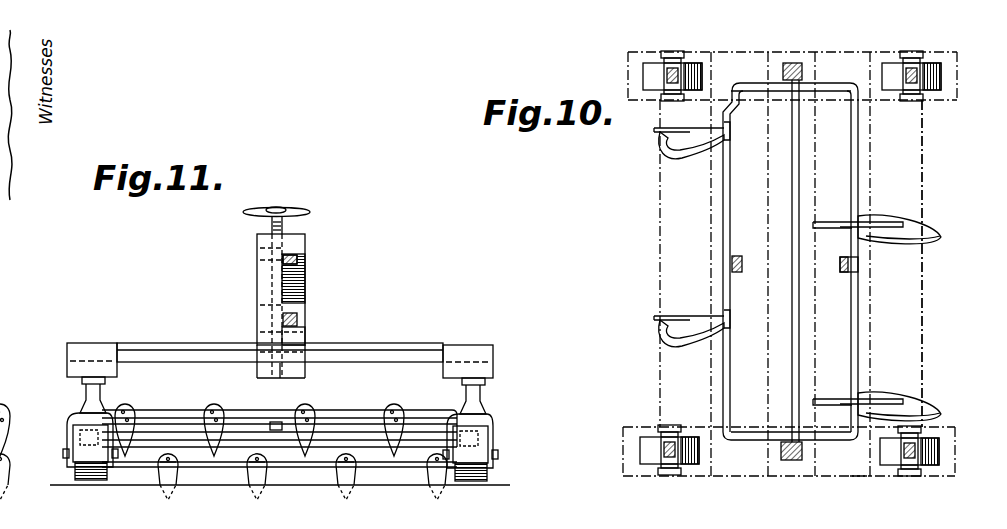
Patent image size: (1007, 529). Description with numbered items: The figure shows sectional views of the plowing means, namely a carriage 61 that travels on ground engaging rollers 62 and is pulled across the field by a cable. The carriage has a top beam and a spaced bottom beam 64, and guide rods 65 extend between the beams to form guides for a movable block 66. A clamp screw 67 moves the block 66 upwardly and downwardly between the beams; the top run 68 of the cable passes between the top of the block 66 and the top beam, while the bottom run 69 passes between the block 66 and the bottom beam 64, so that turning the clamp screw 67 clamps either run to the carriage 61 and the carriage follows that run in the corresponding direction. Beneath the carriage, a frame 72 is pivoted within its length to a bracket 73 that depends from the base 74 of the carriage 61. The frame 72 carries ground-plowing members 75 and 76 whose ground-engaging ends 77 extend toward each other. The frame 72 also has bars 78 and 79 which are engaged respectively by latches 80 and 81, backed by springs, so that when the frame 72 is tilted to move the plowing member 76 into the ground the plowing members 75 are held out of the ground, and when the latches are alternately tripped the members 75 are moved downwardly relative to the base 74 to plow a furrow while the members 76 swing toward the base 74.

In FIG. 10, the carriage 61 is at (924, 336).
In FIG. 11, the carriage 61 is at (307, 240).
In FIG. 10, the ground engaging rollers 62 is at (690, 62).
In FIG. 11, the ground engaging rollers 62 is at (95, 482).
In FIG. 11, the bottom beam 64 is at (306, 338).
In FIG. 11, the guide rods 65 is at (270, 290).
In FIG. 11, the movable block 66 is at (302, 280).
In FIG. 11, the clamp screw 67 is at (268, 226).
In FIG. 11, the top run of the cable 68 is at (298, 258).
In FIG. 11, the bottom run of the cable 69 is at (298, 320).
In FIG. 10, the frame 72 is at (762, 441).
In FIG. 11, the frame 72 is at (172, 409).
In FIG. 10, the bracket 73 is at (795, 62).
In FIG. 10, the base 74 is at (848, 478).
In FIG. 11, the base 74 is at (485, 347).
In FIG. 10, the ground-plowing members 75 is at (672, 157).
In FIG. 11, the ground-plowing members 75 is at (130, 408).
In FIG. 10, the ground-plowing member 76 is at (930, 228).
In FIG. 11, the ground-plowing member 76 is at (178, 470).
In FIG. 10, the ground-engaging ends 77 is at (732, 130).
In FIG. 11, the ground-engaging ends 77 is at (262, 478).
In FIG. 10, the bar 78 is at (733, 210).
In FIG. 11, the bar 78 is at (248, 409).
In FIG. 10, the bar 79 is at (850, 147).
In FIG. 11, the bar 79 is at (294, 468).
In FIG. 10, the latch 80 is at (742, 264).
In FIG. 11, the latch 80 is at (288, 392).
In FIG. 10, the latch 81 is at (840, 268).